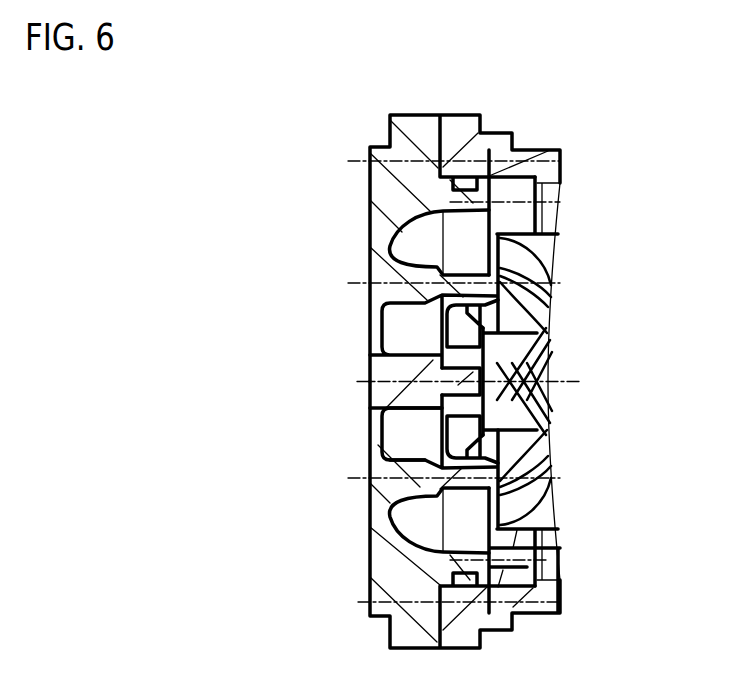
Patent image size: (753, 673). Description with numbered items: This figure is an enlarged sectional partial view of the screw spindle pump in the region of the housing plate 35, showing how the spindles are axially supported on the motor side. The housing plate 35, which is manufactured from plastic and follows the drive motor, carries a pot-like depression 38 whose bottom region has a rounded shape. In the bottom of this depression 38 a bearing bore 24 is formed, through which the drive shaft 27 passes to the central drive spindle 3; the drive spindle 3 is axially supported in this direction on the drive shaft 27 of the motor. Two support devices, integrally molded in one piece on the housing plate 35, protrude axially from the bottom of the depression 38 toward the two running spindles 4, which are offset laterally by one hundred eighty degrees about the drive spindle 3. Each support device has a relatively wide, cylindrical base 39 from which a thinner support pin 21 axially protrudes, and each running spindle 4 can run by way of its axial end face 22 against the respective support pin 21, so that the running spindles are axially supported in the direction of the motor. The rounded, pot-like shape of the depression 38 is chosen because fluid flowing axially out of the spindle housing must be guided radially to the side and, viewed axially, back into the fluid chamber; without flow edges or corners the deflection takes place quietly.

The drive spindle 3 is at (542, 388).
The running spindle 4 is at (535, 500).
The support pin 21 is at (512, 468).
The axial end face 22 is at (552, 527).
The bearing bore 24 is at (385, 353).
The drive shaft 27 is at (393, 370).
The housing plate 35 is at (392, 186).
The depression 38 is at (390, 443).
The cylindrical base 39 is at (423, 472).